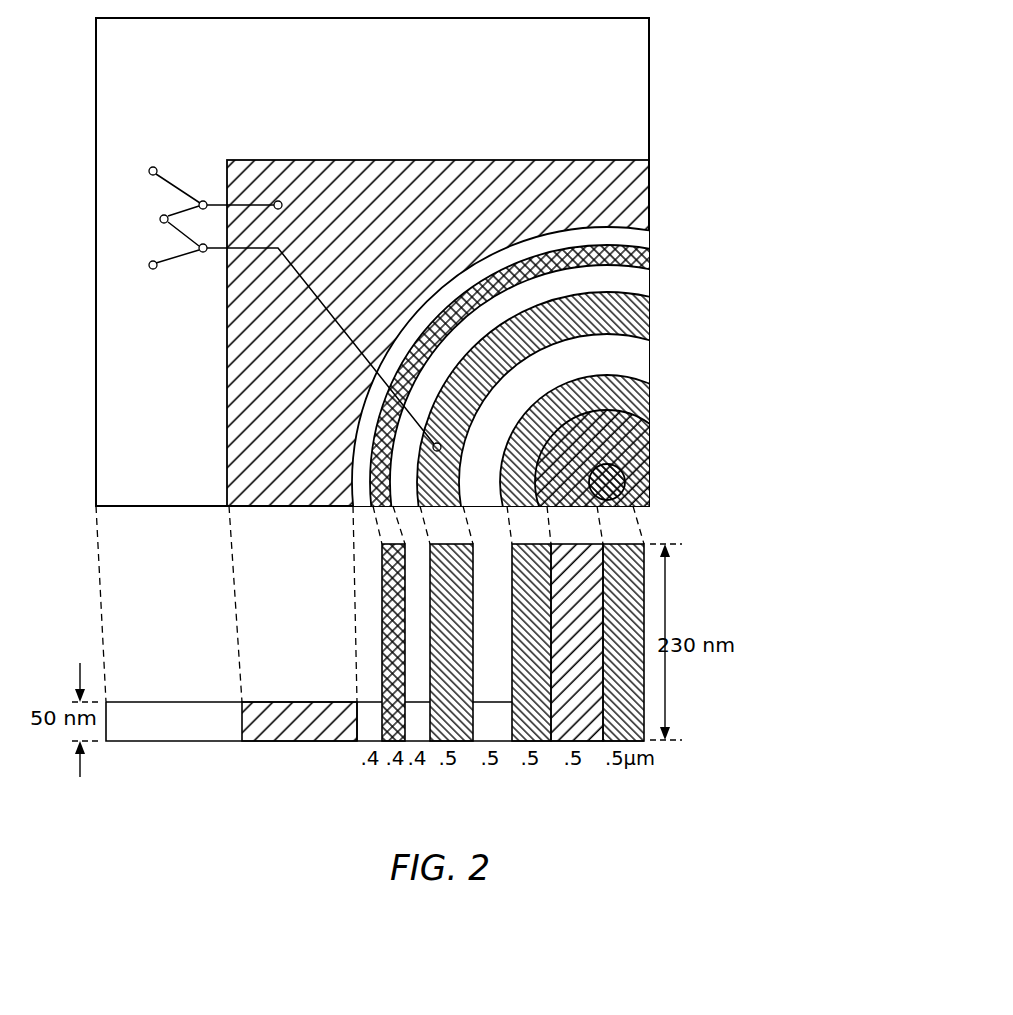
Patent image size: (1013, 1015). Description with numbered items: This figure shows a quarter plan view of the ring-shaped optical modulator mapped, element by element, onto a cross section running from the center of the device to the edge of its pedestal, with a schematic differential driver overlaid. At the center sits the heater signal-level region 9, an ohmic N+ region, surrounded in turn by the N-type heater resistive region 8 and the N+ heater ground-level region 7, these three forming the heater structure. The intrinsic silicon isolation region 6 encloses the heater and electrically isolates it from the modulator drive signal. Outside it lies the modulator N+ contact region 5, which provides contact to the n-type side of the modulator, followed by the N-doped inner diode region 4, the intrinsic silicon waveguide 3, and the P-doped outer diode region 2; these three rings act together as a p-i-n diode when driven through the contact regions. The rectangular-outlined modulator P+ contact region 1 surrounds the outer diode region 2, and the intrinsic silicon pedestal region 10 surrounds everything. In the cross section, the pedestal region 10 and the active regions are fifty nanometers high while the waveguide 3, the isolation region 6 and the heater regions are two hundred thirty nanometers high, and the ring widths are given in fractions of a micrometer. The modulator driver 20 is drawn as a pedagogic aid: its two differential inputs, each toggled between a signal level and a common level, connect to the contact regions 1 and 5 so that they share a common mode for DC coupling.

The modulator P+ contact region 1 is at (632, 182).
The outer diode region 2 is at (635, 240).
The waveguide 3 is at (647, 258).
The inner diode region 4 is at (632, 277).
The modulator N+ contact region 5 is at (638, 312).
The isolation region 6 is at (637, 362).
The heater ground-level region 7 is at (633, 400).
The heater resistive region 8 is at (628, 452).
The heater signal-level region 9 is at (627, 465).
The pedestal region 10 is at (636, 63).
The modulator driver 20 is at (185, 272).